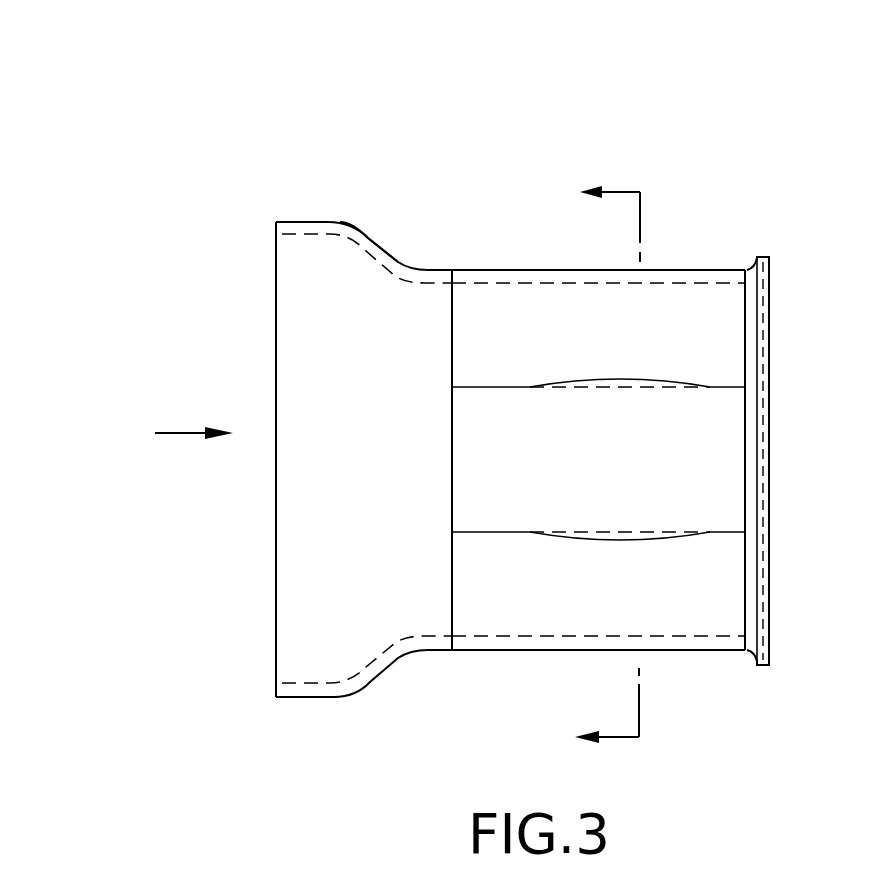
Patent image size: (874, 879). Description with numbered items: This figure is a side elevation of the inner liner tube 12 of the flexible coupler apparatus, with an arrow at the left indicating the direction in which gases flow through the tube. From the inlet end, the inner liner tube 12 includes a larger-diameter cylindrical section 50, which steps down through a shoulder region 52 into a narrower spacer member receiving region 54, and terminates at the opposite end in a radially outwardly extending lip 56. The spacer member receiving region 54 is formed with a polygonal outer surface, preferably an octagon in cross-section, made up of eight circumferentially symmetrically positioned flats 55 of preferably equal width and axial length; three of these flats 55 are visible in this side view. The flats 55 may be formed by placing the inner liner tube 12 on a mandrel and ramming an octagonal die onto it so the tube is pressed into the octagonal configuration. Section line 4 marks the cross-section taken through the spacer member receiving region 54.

The inner liner tube 12 is at (546, 362).
The cylindrical section 50 is at (303, 221).
The shoulder region 52 is at (391, 256).
The spacer member receiving region 54 is at (567, 250).
The flats 55 is at (598, 348).
The radially outwardly extending lip 56 is at (768, 236).
The section line 4- 4 is at (607, 467).